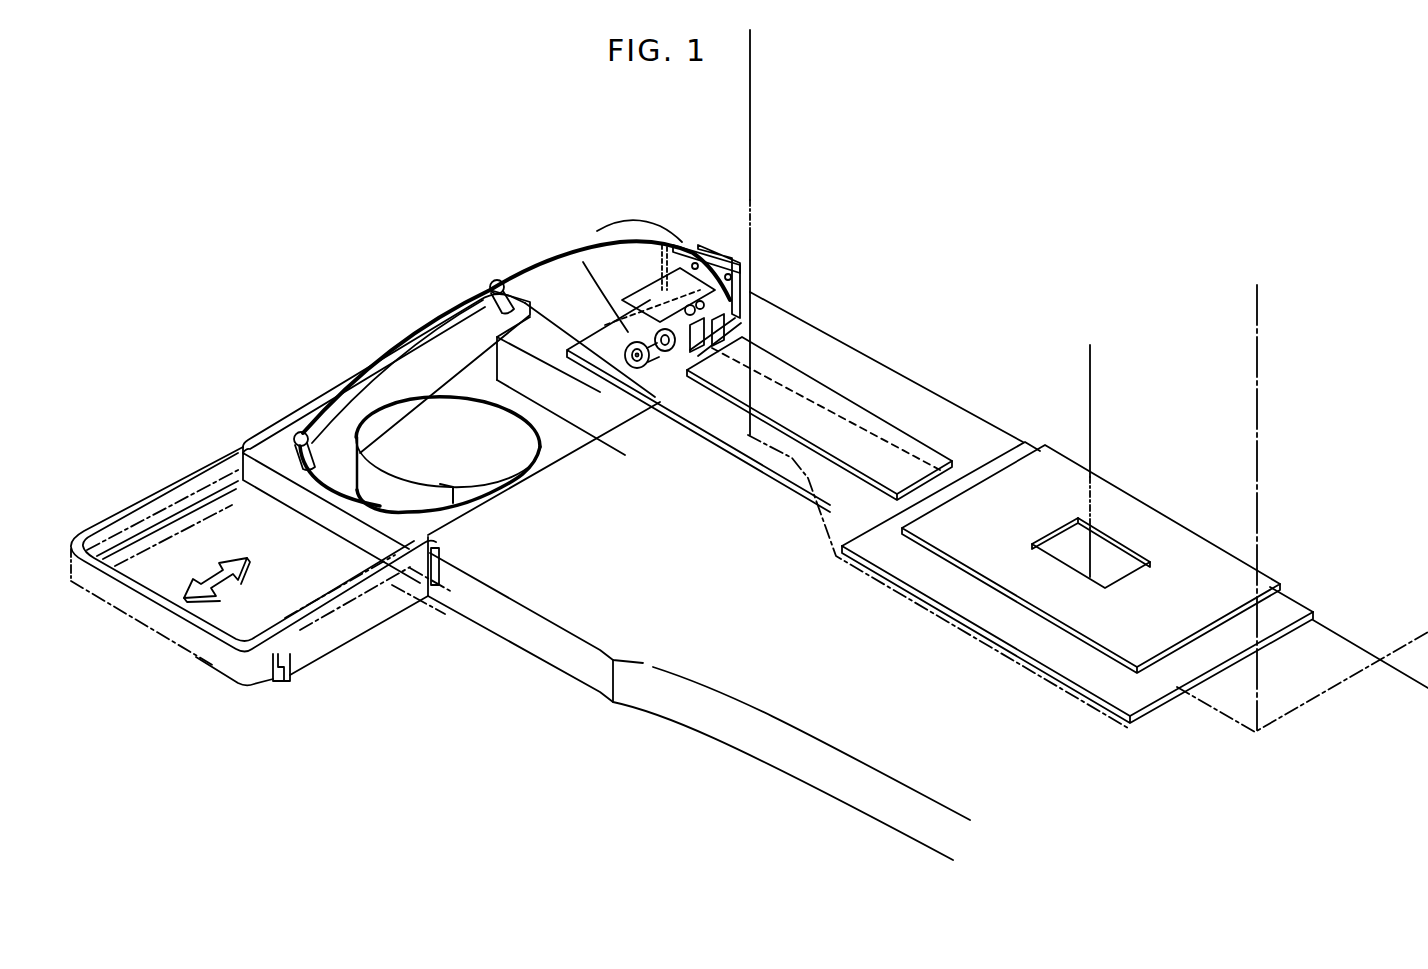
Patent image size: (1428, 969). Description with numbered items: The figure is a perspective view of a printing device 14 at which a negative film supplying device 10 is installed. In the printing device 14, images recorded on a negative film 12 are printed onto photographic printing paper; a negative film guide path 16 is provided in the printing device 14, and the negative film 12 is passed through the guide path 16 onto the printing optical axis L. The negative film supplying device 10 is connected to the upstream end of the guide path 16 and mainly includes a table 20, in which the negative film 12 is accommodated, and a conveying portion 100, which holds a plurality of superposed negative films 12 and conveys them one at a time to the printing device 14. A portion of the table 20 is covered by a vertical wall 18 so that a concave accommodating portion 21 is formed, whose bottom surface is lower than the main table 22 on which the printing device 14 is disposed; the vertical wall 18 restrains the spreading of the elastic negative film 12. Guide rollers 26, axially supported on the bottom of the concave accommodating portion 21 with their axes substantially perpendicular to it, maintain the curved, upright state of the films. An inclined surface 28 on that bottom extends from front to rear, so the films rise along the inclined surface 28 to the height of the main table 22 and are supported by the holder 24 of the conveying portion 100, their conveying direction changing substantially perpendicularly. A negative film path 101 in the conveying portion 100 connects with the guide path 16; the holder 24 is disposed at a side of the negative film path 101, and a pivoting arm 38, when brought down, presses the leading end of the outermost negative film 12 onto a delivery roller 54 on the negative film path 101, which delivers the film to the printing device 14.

The conveying portion 100 is at (600, 190).
The negative film supplying device 10 is at (552, 228).
The negative film 12 is at (628, 245).
The printing device 14 is at (1262, 398).
The negative film guide path 16 is at (857, 427).
The vertical wall 18 is at (120, 512).
The table 20 is at (312, 522).
The concave accommodating portion 21 is at (563, 437).
The main table 22 is at (595, 626).
The holder 24 is at (688, 240).
The guide rollers 26 is at (498, 285).
The inclined surface 28 is at (440, 360).
The pivoting arm 38 is at (740, 262).
The delivery roller 54 is at (688, 337).
The negative film path 101 is at (752, 293).
The printing optical axis L is at (1090, 425).